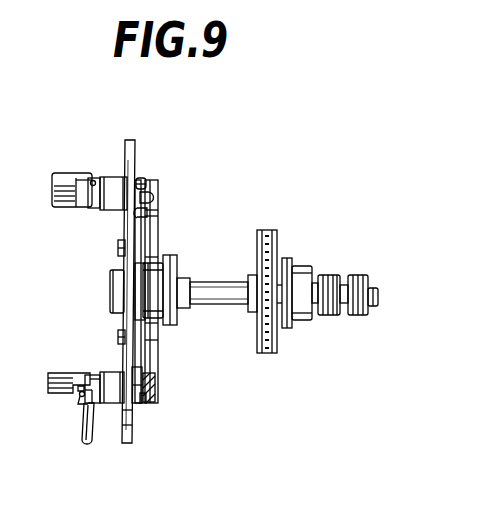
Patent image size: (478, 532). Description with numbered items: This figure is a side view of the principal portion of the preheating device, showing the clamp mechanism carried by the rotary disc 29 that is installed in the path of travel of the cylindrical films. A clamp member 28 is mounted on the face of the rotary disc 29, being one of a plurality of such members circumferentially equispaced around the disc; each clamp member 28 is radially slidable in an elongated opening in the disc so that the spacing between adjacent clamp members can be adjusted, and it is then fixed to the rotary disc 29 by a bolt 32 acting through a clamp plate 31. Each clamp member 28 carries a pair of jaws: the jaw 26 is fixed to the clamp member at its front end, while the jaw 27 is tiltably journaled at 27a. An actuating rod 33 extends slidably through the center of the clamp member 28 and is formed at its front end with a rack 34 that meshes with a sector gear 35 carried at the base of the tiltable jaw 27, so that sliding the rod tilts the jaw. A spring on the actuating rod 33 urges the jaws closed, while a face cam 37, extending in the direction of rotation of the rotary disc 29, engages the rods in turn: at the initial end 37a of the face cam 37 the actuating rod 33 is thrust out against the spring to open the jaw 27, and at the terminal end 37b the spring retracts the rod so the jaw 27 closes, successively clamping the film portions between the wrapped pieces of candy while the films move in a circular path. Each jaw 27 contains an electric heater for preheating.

The jaw 26 is at (63, 207).
The jaw 27 is at (63, 173).
The journal 27a is at (94, 180).
The clamp member 28 is at (113, 211).
The rotary disc 29 is at (134, 148).
The clamp plate 31 is at (143, 214).
The bolt 32 is at (138, 402).
The actuating rod 33 is at (143, 186).
The rack 34 is at (82, 389).
The sector gear 35 is at (80, 397).
The face cam 37 is at (140, 355).
The initial end of face cam 37a is at (156, 383).
The terminal end of face cam 37b is at (158, 198).